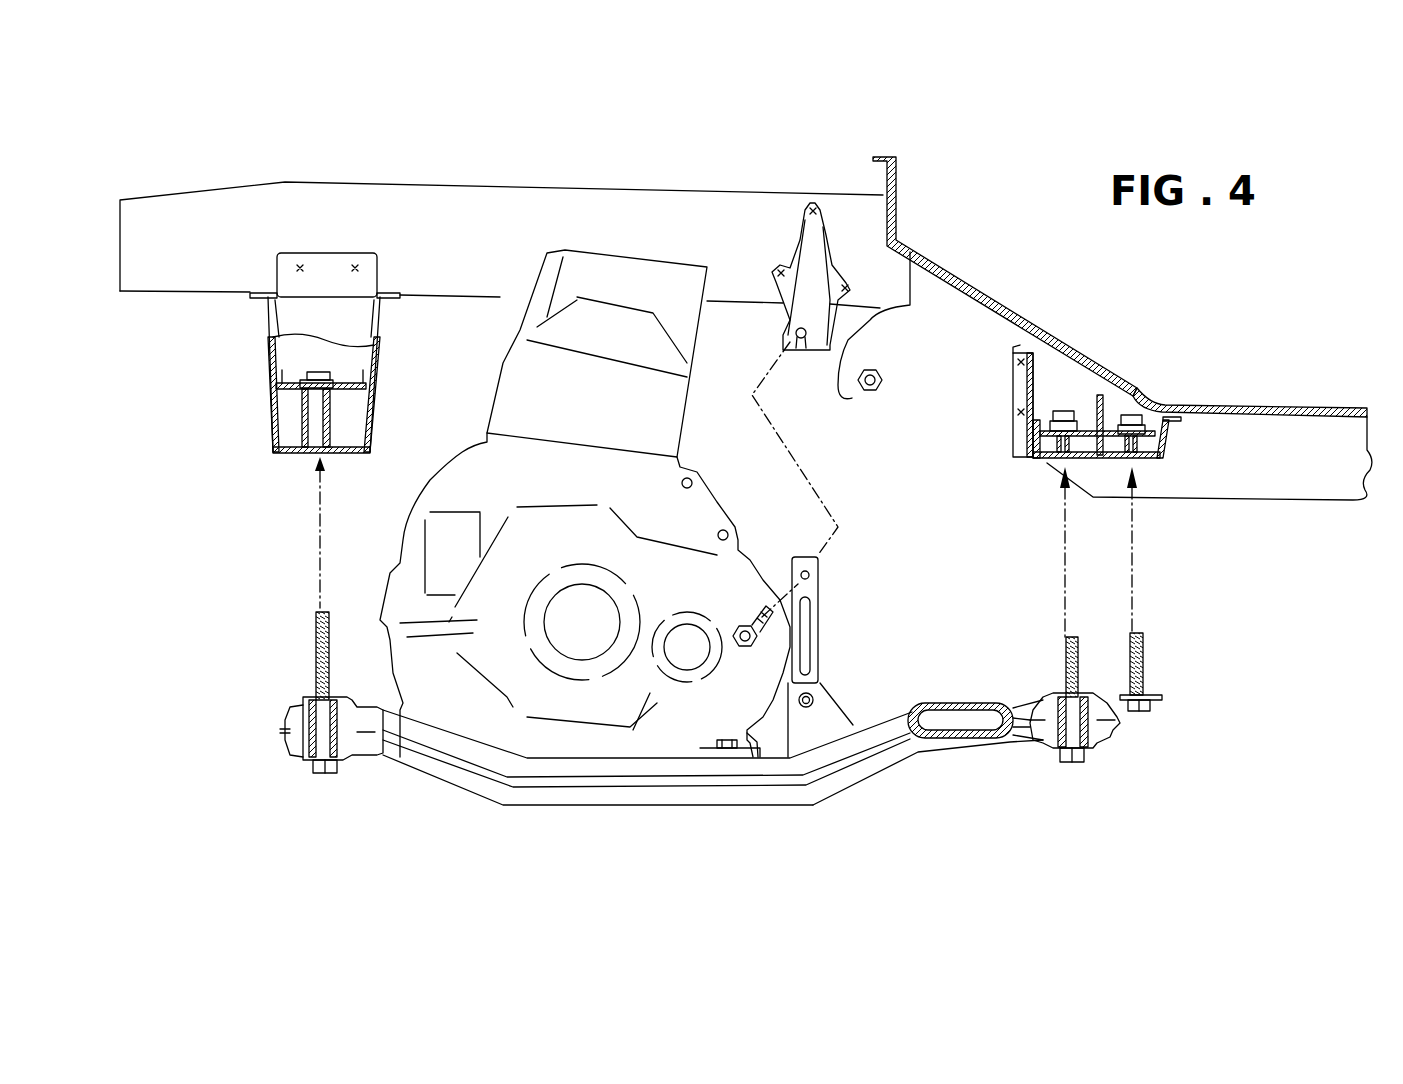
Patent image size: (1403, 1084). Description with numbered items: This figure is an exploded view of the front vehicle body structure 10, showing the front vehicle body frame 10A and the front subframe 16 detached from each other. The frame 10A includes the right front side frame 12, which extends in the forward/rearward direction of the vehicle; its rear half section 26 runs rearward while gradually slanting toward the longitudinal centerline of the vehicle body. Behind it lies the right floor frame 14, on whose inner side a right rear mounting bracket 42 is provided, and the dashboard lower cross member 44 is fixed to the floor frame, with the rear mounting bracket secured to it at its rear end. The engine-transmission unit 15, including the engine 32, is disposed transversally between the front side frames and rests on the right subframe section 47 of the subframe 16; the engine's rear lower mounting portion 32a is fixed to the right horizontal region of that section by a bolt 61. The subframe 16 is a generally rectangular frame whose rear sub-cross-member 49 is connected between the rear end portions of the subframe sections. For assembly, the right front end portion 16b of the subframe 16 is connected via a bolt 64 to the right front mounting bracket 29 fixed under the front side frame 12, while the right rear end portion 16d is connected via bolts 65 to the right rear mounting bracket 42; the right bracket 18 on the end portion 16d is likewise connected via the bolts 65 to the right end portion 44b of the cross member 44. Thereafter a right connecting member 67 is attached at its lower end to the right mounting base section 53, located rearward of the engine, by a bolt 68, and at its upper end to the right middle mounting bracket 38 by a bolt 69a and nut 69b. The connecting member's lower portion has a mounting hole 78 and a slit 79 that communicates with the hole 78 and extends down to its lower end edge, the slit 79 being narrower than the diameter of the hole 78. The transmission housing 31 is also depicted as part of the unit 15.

The front vehicle body structure 10 is at (934, 137).
The front vehicle body frame 10A is at (300, 153).
The right front side frame 12 is at (457, 185).
The right floor frame 14 is at (1315, 410).
The engine-transmission unit 15 is at (600, 240).
The front subframe 16 is at (558, 821).
The right front end portion 16b is at (290, 745).
The right rear end portion 16d is at (1110, 743).
The right bracket 18 is at (1162, 694).
The rear half section 26 is at (743, 200).
The right front mounting bracket 29 is at (270, 358).
The transmission housing 31 is at (403, 547).
The engine 32 is at (522, 276).
The rear lower mounting portion 32a is at (750, 752).
The right middle mounting bracket 38 is at (843, 253).
The right rear mounting bracket 42 is at (1028, 373).
The dashboard lower cross member 44 is at (1170, 450).
The right end portion 44b is at (1181, 436).
The right subframe section 47 is at (615, 805).
The rear sub-cross-member 49 is at (961, 704).
The right mounting base section 53 is at (810, 737).
The bolt 61 is at (729, 739).
The bolt 64 is at (314, 640).
The bolts 65 is at (1145, 633).
The right connecting member 67 is at (813, 628).
The bolt 68 is at (815, 698).
The bolt 69a is at (752, 626).
The nut 69b is at (879, 371).
The mounting hole 78 is at (791, 332).
The slit 79 is at (803, 343).